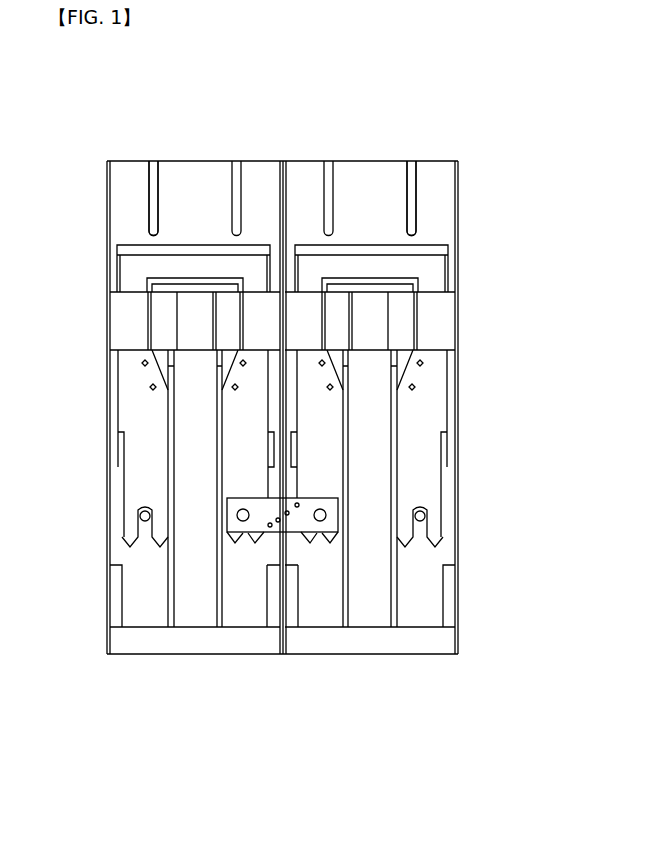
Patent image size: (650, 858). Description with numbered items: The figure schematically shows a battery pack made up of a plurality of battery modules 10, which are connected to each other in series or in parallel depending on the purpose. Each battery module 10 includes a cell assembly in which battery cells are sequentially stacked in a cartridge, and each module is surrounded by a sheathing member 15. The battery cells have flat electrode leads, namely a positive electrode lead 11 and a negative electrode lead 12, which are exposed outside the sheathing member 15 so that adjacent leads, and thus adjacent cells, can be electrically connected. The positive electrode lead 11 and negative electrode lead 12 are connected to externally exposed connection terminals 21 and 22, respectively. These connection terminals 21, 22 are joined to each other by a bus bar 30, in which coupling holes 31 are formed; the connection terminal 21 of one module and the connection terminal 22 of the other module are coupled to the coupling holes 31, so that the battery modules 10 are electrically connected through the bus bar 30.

The battery module 10 is at (185, 149).
The positive electrode lead 11 is at (120, 452).
The negative electrode lead 12 is at (445, 450).
The sheathing member 15 is at (130, 232).
The connection terminal 21 is at (140, 516).
The connection terminal 22 is at (432, 513).
The bus bar 30 is at (338, 524).
The coupling hole 31 is at (243, 521).